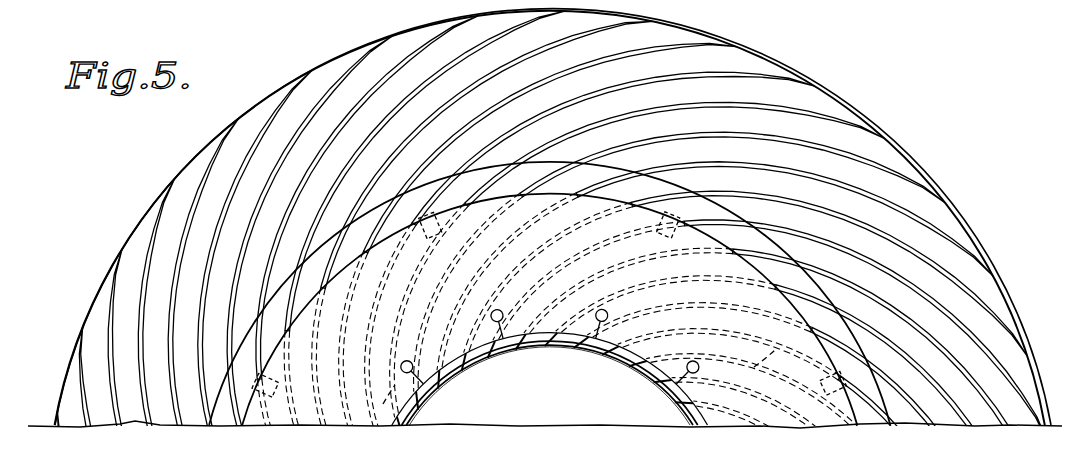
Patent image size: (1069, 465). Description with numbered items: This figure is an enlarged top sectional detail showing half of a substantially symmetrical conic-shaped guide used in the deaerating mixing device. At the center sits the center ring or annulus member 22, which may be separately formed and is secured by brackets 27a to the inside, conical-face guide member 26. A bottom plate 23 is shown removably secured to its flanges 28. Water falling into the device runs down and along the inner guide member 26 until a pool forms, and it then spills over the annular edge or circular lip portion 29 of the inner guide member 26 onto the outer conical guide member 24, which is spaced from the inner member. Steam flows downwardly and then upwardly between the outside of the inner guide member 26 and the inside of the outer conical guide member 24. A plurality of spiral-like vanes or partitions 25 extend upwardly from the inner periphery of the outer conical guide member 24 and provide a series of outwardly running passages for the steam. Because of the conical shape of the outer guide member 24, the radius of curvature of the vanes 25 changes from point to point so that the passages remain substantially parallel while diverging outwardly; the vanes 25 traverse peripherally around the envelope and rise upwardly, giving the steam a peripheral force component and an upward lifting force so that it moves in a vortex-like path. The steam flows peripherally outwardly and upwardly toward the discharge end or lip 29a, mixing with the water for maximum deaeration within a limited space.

The center ring 22 is at (686, 415).
The bottom plate 23 is at (470, 410).
The outer conical guide member 24 is at (992, 424).
The spiral-like vanes or partitions 25 is at (860, 118).
The inside conical-face guide member 26 is at (780, 390).
The brackets 27a is at (850, 393).
The flanges 28 is at (372, 408).
The annular edge or circular lip portion 29 is at (262, 395).
The discharge end or lip 29a is at (925, 168).